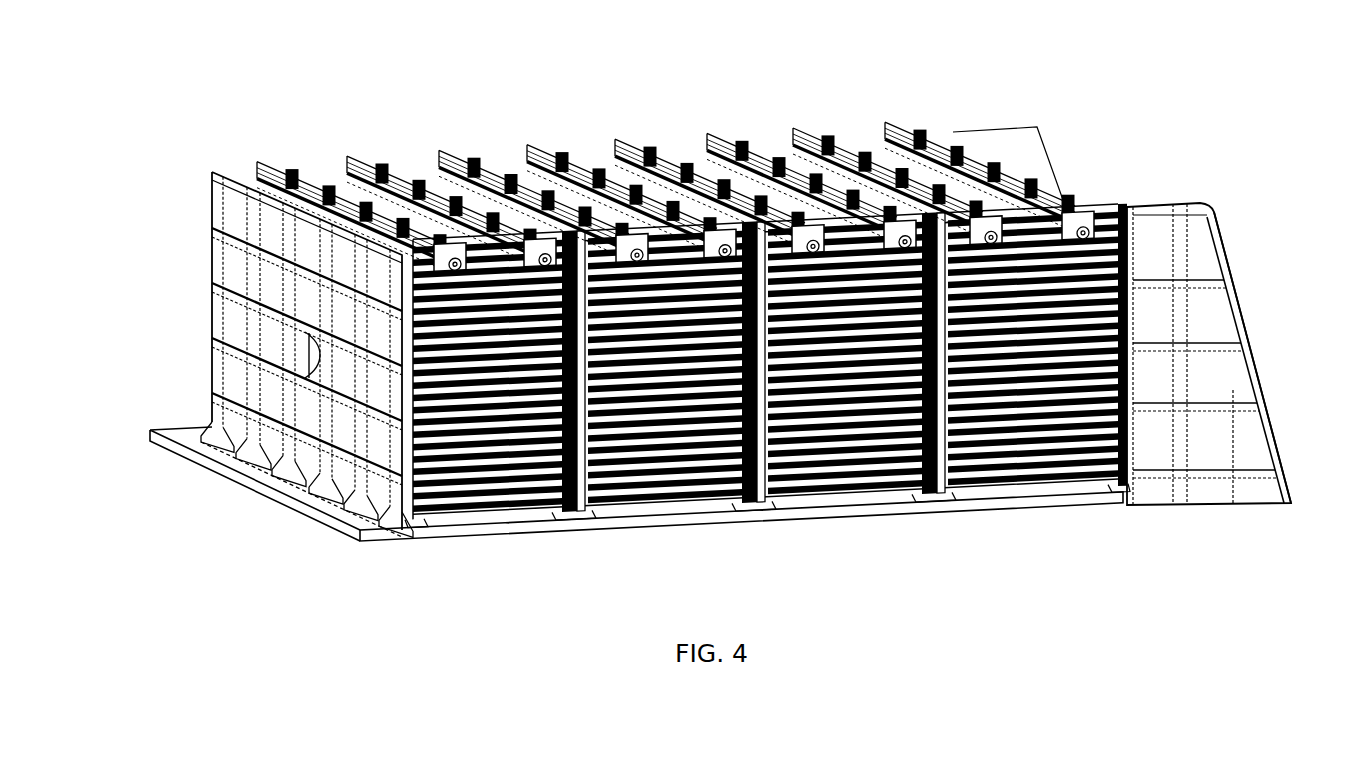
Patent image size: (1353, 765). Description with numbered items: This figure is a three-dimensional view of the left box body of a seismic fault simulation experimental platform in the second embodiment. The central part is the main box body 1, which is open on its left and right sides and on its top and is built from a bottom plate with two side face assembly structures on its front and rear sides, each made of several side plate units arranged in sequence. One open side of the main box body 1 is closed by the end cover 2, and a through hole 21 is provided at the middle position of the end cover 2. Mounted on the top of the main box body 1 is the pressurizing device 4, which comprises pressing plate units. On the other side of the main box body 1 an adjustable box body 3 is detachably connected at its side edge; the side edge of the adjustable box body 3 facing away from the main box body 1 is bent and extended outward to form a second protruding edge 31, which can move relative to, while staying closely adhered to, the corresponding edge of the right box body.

The main box body 1 is at (830, 472).
The end cover 2 is at (238, 258).
The through hole 21 is at (303, 345).
The adjustable box body 3 is at (1213, 381).
The second protruding edge 31 is at (1226, 254).
The pressurizing device 4 is at (634, 166).